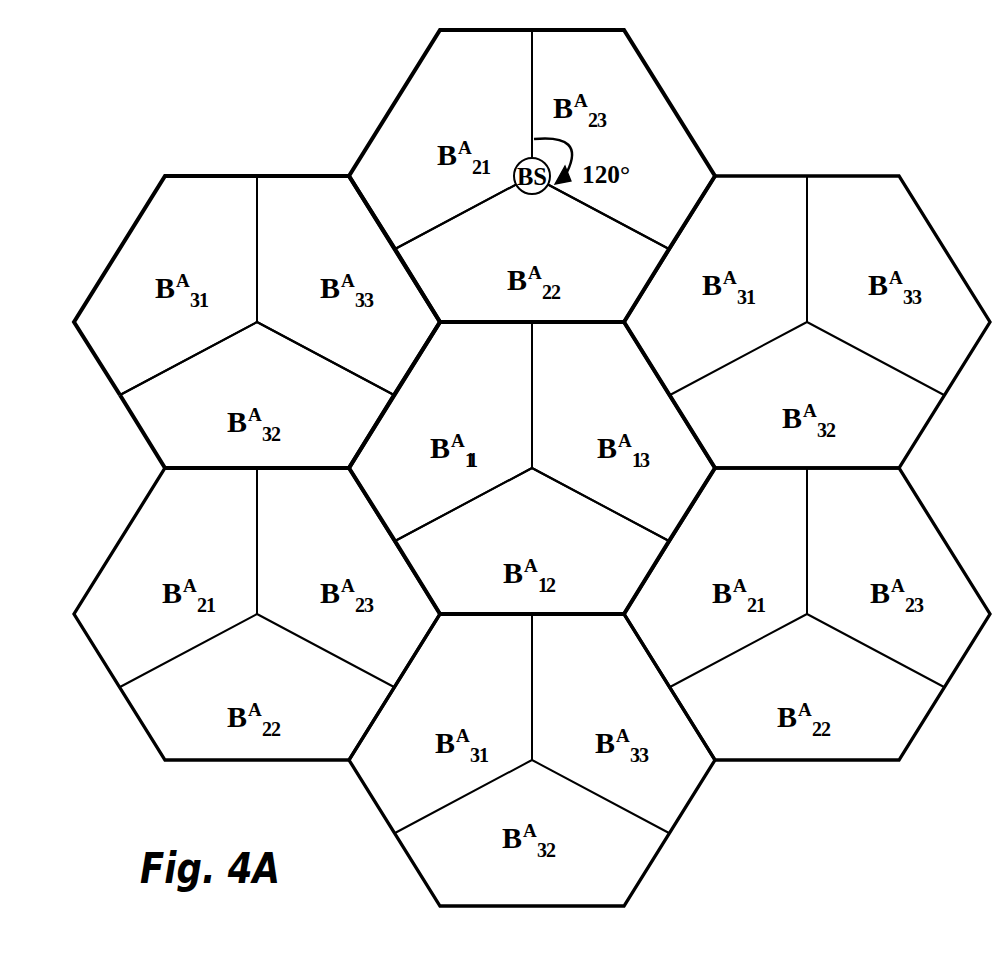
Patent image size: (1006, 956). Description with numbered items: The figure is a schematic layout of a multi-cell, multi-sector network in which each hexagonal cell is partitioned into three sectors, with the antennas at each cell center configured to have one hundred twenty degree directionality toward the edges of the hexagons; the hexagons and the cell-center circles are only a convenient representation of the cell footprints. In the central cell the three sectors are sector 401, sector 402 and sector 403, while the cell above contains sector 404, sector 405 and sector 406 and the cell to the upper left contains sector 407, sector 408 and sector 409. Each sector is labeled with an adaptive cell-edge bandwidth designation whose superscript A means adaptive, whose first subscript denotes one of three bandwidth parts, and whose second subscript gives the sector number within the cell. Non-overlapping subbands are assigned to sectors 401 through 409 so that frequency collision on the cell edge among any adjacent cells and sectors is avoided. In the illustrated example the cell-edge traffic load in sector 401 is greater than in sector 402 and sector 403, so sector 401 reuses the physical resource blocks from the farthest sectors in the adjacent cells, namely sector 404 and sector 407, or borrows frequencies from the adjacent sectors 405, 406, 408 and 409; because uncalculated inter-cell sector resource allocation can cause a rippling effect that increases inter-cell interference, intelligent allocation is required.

The sector 401 is at (440, 431).
The sector 402 is at (532, 541).
The sector 403 is at (623, 431).
The sector 404 is at (440, 139).
The sector 405 is at (532, 249).
The sector 406 is at (623, 139).
The sector 407 is at (165, 285).
The sector 408 is at (257, 395).
The sector 409 is at (348, 285).